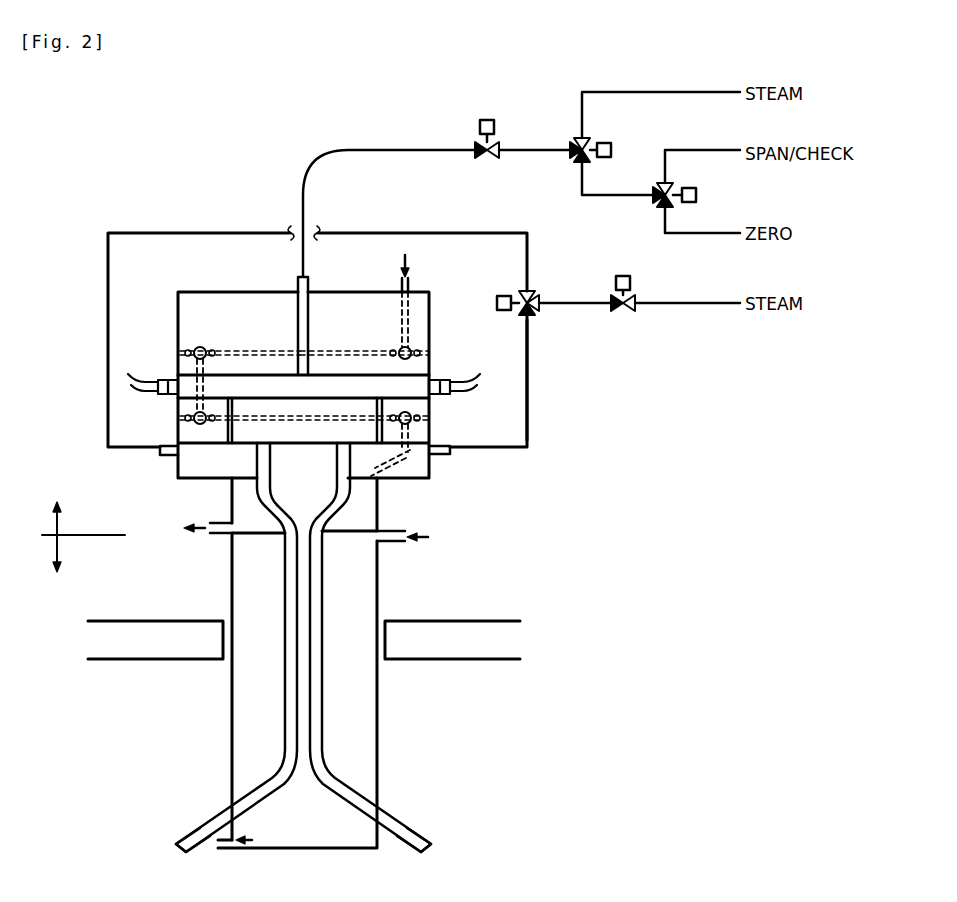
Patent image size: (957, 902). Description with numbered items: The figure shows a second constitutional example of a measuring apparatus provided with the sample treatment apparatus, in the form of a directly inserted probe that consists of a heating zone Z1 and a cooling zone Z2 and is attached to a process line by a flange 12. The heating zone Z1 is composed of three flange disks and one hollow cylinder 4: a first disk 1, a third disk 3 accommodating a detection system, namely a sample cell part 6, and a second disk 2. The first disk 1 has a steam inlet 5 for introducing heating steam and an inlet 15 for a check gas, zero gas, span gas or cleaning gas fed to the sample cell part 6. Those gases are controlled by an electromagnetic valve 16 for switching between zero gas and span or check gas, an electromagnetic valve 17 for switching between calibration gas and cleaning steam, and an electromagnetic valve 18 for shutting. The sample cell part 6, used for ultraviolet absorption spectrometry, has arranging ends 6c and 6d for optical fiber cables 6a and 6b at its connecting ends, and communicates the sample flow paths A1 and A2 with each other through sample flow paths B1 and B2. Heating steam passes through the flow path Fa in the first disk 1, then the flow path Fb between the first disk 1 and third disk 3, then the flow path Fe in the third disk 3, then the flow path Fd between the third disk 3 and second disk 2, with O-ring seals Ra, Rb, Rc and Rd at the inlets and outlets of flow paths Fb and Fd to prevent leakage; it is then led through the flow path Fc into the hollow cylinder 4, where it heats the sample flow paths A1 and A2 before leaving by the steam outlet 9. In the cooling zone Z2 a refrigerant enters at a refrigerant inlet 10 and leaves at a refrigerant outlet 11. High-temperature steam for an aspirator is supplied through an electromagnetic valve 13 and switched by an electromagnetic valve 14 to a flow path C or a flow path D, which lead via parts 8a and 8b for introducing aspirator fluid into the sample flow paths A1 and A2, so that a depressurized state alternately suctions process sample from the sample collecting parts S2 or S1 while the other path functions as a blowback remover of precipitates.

The first disk 1 is at (430, 342).
The second disk 2 is at (432, 463).
The third disk 3 is at (431, 373).
The hollow cylinder 4 is at (378, 506).
The steam inlet 5 is at (412, 286).
The sample cell part 6 is at (332, 373).
The optical fiber cable 6a is at (137, 385).
The optical fiber cable 6b is at (472, 390).
The arranging end for optical fiber cable 6c is at (165, 395).
The arranging end for optical fiber cable 6d is at (441, 394).
The part for introducing a fluid for an aspirator 8a is at (158, 453).
The part for introducing a fluid for an aspirator 8b is at (450, 453).
The steam outlet 9 is at (213, 535).
The refrigerant inlet 10 is at (391, 543).
The refrigerant outlet 11 is at (227, 855).
The flange 12 is at (463, 620).
The electromagnetic valve 13 is at (632, 284).
The electromagnetic valve 14 is at (533, 299).
The inlet 15 is at (307, 283).
The electromagnetic valve 16 is at (696, 190).
The electromagnetic valve 17 is at (612, 143).
The electromagnetic valve 18 is at (491, 121).
The sample flow path A1 is at (285, 648).
The sample flow path A2 is at (322, 648).
The sample flow path B1 is at (226, 432).
The sample flow path B2 is at (374, 425).
The flow path C is at (105, 363).
The flow path D is at (528, 397).
The flow path Fa is at (428, 318).
The flow path Fb is at (277, 350).
The flow path Fc is at (397, 470).
The flow path Fd is at (270, 421).
The flow path Fe is at (194, 380).
The O-ring seal Ra is at (423, 353).
The O-ring seal Rb is at (192, 351).
The O-ring seal Rc is at (186, 422).
The O-ring seal Rd is at (430, 420).
The sample collecting part S1 is at (183, 848).
The sample collecting part S2 is at (423, 848).
The heating zone Z1 is at (83, 507).
The cooling zone Z2 is at (56, 568).